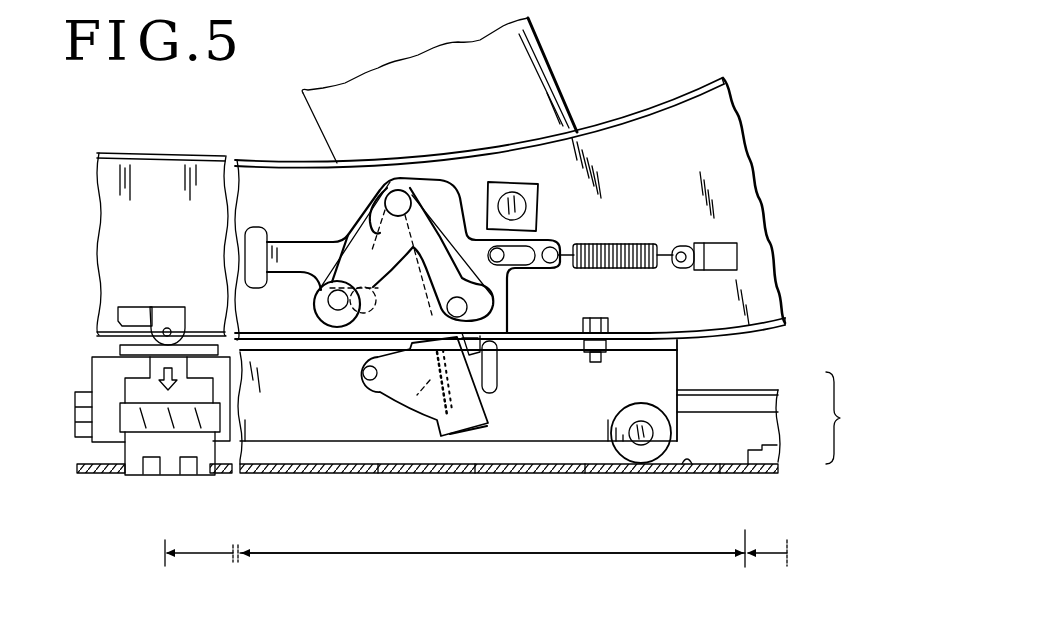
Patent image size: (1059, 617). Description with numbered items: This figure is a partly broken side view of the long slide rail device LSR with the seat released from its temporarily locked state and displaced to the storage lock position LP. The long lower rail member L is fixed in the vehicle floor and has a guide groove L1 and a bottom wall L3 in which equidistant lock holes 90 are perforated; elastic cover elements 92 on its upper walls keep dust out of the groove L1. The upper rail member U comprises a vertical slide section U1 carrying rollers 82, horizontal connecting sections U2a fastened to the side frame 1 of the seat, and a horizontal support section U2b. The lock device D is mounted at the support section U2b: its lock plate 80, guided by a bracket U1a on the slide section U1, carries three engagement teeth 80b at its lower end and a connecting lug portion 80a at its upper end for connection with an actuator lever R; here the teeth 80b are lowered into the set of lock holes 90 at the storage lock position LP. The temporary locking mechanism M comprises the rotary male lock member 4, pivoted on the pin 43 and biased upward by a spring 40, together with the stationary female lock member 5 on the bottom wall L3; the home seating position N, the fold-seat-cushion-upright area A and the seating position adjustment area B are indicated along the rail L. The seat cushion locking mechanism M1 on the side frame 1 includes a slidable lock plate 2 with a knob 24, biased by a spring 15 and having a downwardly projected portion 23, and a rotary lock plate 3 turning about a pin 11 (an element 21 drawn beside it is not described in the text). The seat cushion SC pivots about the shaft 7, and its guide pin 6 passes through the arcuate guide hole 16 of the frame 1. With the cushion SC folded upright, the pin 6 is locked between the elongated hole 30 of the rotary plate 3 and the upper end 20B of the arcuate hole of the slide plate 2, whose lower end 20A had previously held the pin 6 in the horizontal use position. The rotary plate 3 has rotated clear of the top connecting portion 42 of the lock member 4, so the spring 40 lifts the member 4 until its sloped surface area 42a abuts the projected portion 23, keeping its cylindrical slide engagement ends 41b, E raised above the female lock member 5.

The side frame 1 is at (624, 106).
The seat cushion SC is at (543, 50).
The seat cushion locking mechanism M1 is at (722, 168).
The slidable lock plate 2 is at (312, 237).
The rotary lock plate 3 is at (358, 238).
The knob 24 is at (256, 227).
The guide pin 6 is at (397, 190).
The upper end of arcuate hole 20B is at (418, 200).
The lower end of arcuate hole 20A is at (465, 306).
The shaft 7 is at (512, 199).
The spring 15 is at (618, 243).
The arcuate guide hole 16 is at (482, 323).
The pin 11 is at (328, 303).
The pin 21 is at (373, 310).
The elongated hole 30 is at (405, 248).
The elastic cover elements 92 is at (700, 348).
The temporary locking mechanism M is at (808, 354).
The lock device D is at (155, 262).
The actuator lever R is at (133, 306).
The connecting lug portion 80a is at (186, 326).
The horizontal support section U2b is at (124, 346).
The lock plate 80 is at (136, 388).
The vertical slide section U1 is at (104, 408).
The bracket U1a is at (122, 420).
The lock holes 90 is at (128, 476).
The engagement teeth 80b is at (192, 478).
The pin 43 is at (362, 374).
The top connecting portion 42 is at (392, 392).
The spring 40 is at (422, 395).
The cylindrical slide engagement end 41b is at (462, 440).
The edge E is at (460, 518).
The downwardly projected portion 23 is at (494, 346).
The sloped surface area 42a is at (498, 362).
The rotary male lock member 4 is at (503, 420).
The horizontal connecting sections U2a is at (630, 352).
The rollers 82 is at (647, 463).
The upper rail member U is at (712, 372).
The guide groove L1 is at (716, 410).
The long lower rail member L is at (788, 436).
The long slide rail device LSR is at (856, 418).
The stationary female lock member 5 is at (774, 452).
The bottom wall L3 is at (688, 470).
The storage lock position LP is at (195, 571).
The forward movable limit region A is at (492, 570).
The home seating position N is at (742, 561).
The seating position adjustment area B is at (768, 566).